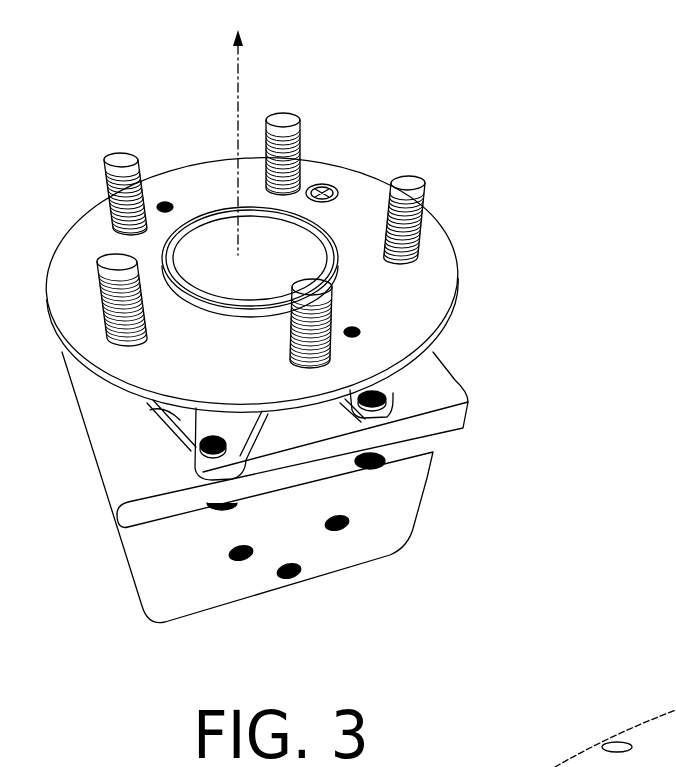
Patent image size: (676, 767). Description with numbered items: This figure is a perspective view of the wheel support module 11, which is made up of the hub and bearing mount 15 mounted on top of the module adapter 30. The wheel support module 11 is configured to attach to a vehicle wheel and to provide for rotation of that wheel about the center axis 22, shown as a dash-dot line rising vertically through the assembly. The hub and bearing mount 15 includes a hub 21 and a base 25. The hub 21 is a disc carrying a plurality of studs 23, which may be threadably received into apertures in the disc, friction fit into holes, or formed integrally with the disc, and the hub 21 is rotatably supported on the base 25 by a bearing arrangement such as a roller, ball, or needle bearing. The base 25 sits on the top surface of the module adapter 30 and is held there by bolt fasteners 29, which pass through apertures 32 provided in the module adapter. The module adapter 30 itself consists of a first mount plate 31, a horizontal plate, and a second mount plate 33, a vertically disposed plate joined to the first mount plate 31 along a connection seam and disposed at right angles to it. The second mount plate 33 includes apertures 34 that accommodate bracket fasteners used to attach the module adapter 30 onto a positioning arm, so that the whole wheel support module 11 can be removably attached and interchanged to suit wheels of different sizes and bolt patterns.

The wheel support module 11 is at (339, 334).
The hub and bearing mount 15 is at (362, 163).
The hub 21 is at (444, 278).
The center axis 22 is at (243, 63).
The studs 23 is at (410, 181).
The base 25 is at (160, 414).
The bolt fasteners 29 is at (214, 442).
The module adapter 30 is at (438, 472).
The first mount plate 31 is at (450, 400).
The apertures 32 is at (614, 743).
The second mount plate 33 is at (390, 495).
The apertures 34 is at (243, 562).